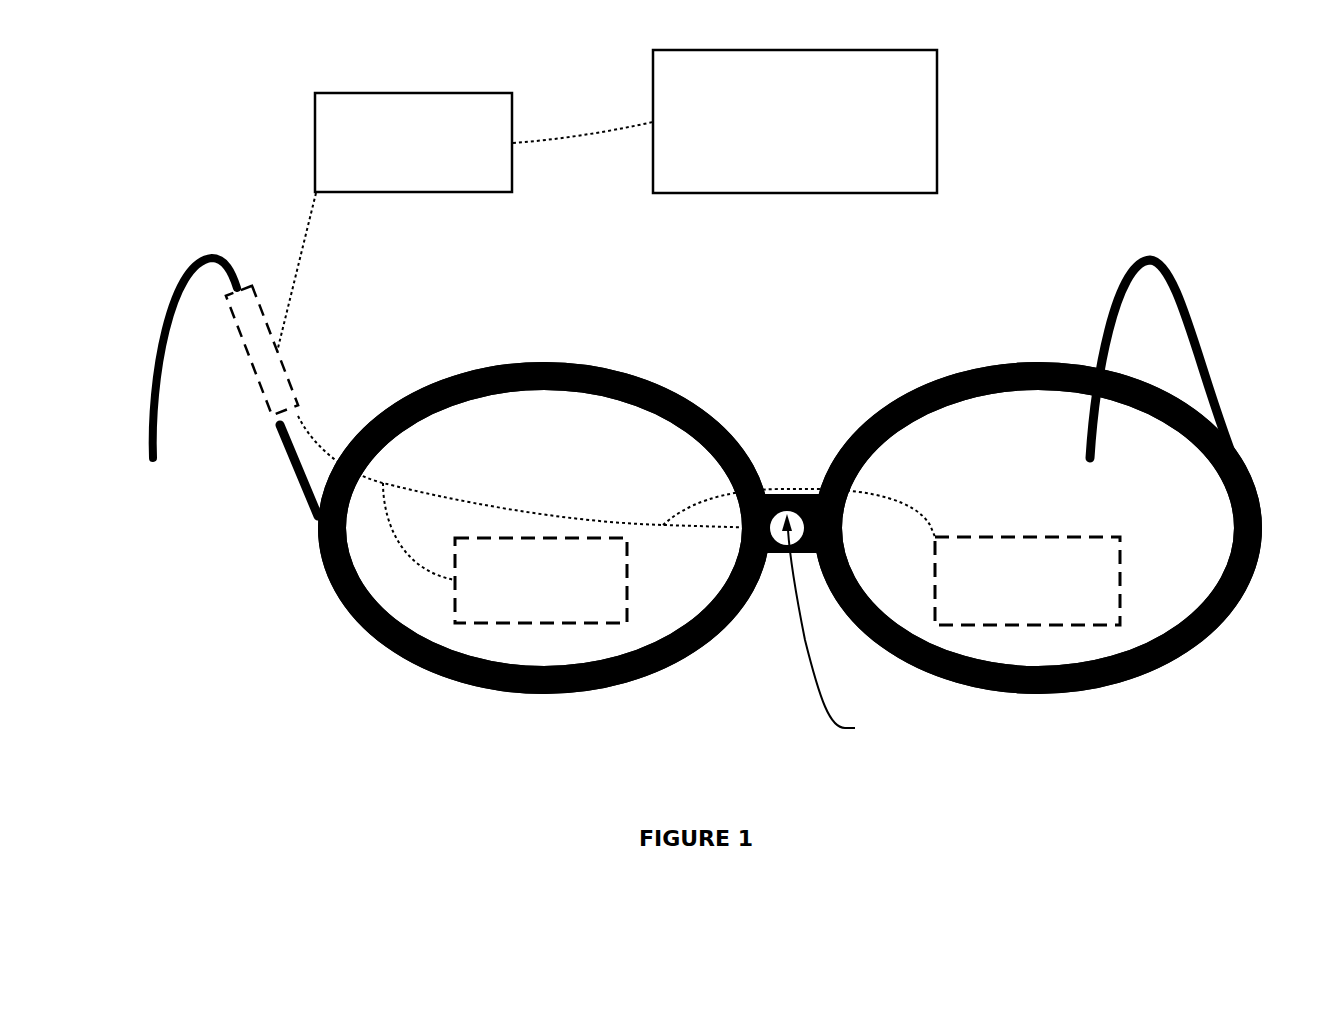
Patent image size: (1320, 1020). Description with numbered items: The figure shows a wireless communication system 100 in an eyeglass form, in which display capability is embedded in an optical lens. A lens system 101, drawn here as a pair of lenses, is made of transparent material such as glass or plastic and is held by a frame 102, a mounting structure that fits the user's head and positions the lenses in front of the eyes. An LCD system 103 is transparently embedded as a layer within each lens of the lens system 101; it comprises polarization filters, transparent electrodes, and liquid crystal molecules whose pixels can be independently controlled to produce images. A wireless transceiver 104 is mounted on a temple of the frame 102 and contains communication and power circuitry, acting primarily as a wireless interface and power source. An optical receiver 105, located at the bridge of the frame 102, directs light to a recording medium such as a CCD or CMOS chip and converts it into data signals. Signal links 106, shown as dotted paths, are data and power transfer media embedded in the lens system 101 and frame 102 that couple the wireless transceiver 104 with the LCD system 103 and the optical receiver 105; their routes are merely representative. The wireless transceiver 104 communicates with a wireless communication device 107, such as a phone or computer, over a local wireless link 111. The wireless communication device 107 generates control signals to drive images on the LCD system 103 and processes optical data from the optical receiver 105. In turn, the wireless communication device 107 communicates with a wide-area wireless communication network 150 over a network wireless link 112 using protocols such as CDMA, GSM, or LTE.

The wireless communication system 100 is at (1169, 17).
The lens system 101 is at (920, 455).
The frame 102 is at (503, 700).
The Liquid Crystal Display (LCD) system 103 is at (787, 581).
The wireless transceiver 104 is at (262, 350).
The optical receiver 105 is at (1087, 739).
The signal links 106 is at (383, 472).
The wireless communication device 107 is at (413, 142).
The local wireless link 111 is at (305, 226).
The network wireless link 112 is at (554, 138).
The wireless communication network 150 is at (795, 121).